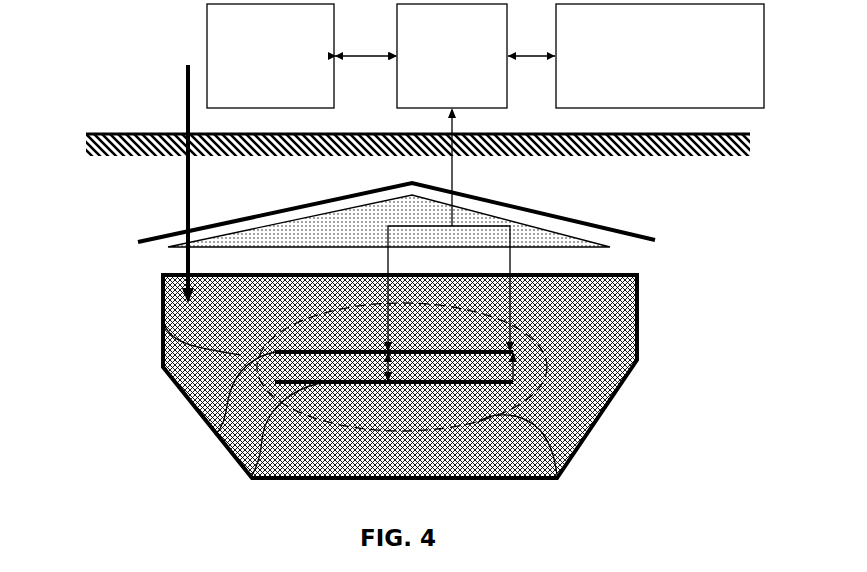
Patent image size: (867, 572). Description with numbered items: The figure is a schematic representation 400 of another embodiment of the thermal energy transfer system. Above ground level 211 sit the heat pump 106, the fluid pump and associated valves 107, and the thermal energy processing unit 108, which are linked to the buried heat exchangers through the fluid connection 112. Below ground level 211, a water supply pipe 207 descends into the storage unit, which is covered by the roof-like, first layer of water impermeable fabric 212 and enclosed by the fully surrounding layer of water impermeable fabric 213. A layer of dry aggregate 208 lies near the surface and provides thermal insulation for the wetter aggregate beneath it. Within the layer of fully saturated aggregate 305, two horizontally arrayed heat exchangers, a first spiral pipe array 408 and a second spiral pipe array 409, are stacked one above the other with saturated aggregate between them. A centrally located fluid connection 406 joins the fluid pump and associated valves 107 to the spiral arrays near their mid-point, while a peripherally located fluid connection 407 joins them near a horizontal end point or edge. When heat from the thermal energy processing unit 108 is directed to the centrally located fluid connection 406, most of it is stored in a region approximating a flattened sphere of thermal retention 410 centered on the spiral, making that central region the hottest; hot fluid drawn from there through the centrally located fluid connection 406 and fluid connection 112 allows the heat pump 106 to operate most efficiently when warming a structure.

The heat pump 106 is at (270, 56).
The fluid pump and associated valves 107 is at (452, 56).
The thermal energy processing unit 108 is at (660, 56).
The fluid connection 112 is at (452, 180).
The water supply pipe 207 is at (182, 100).
The layer of dry aggregate 208 is at (305, 238).
The ground level 211 is at (90, 130).
The roof-like, first layer of water impermeable fabric 212 is at (585, 222).
The fully surrounding layer of water impermeable fabric 213 is at (612, 395).
The layer of fully saturated aggregate 305 is at (163, 320).
The schematic representation 400 is at (379, 383).
The centrally located fluid connection 406 is at (386, 340).
The peripherally located fluid connection 407 is at (515, 352).
The first spiral pipe array 408 is at (215, 435).
The second spiral pipe array 409 is at (250, 478).
The flattened sphere of thermal retention 410 is at (555, 472).